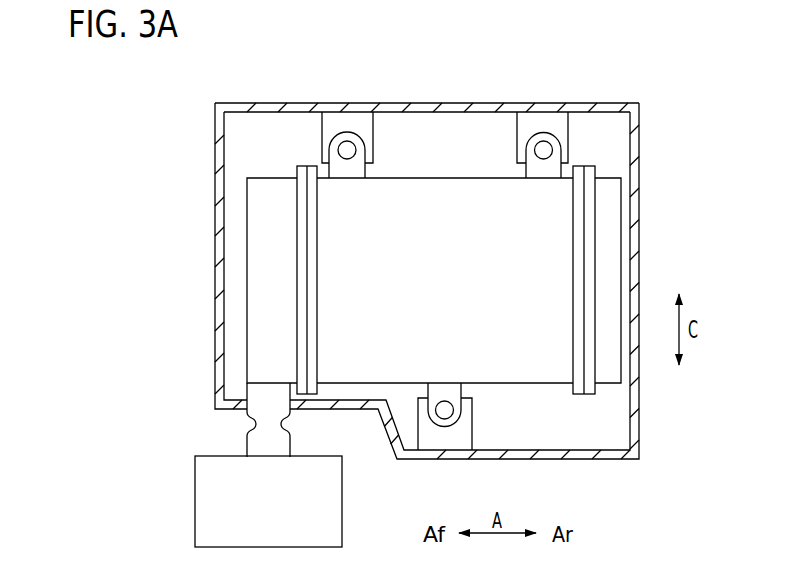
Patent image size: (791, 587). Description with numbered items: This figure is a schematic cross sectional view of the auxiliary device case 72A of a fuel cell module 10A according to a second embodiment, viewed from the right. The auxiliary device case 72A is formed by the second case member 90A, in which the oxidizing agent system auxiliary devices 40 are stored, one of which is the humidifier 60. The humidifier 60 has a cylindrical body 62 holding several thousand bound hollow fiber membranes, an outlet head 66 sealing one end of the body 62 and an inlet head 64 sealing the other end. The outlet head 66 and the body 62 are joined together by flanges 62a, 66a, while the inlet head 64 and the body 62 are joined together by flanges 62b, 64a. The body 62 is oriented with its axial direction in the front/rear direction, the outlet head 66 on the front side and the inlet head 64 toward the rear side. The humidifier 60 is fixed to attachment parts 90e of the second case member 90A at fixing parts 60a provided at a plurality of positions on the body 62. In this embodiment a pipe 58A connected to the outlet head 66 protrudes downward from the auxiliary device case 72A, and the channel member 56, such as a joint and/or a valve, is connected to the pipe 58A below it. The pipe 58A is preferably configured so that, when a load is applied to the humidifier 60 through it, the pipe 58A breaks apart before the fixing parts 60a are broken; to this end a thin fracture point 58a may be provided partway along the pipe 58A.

The fuel cell module 10A is at (142, 124).
The oxidizing agent system auxiliary devices 40 is at (626, 259).
The channel member 56 is at (205, 510).
The pipe 58A is at (270, 438).
The thin fracture point 58a is at (247, 422).
The humidifier 60 is at (438, 172).
The fixing parts 60a is at (360, 157).
The body 62 is at (379, 363).
The flange 62a is at (312, 308).
The flange 62b is at (578, 397).
The inlet head 64 is at (604, 209).
The flange 64a is at (588, 397).
The outlet head 66 is at (258, 215).
The flange 66a is at (303, 297).
The auxiliary device case 72A is at (600, 100).
The second case member 90A is at (633, 157).
The attachment parts 90e is at (352, 123).